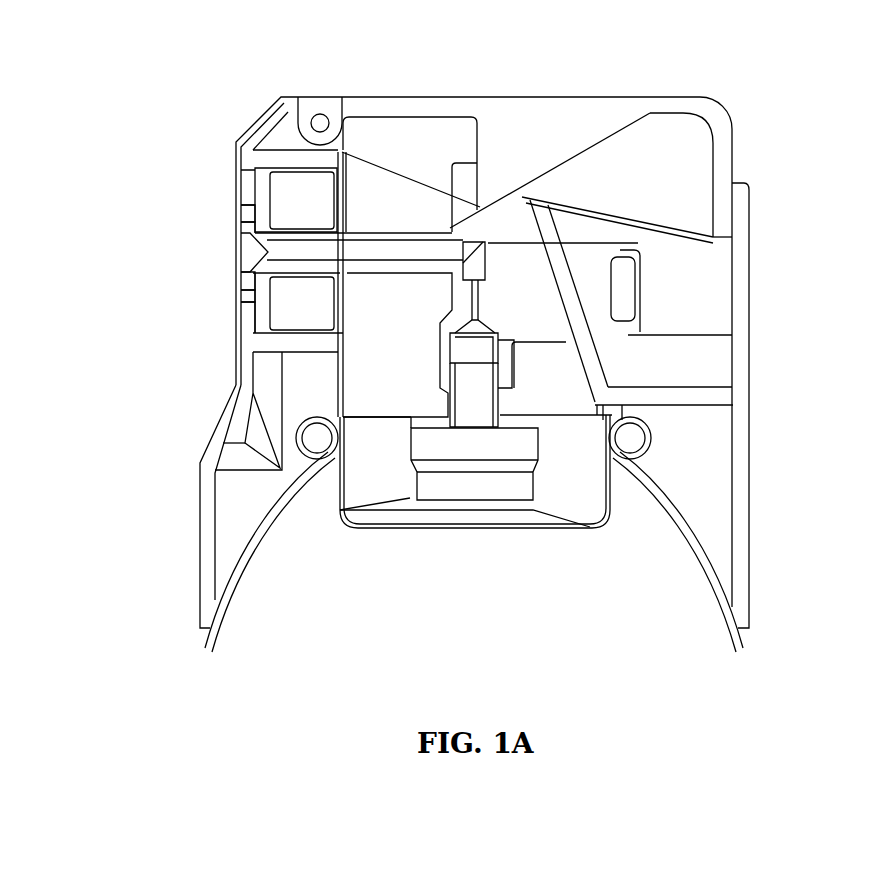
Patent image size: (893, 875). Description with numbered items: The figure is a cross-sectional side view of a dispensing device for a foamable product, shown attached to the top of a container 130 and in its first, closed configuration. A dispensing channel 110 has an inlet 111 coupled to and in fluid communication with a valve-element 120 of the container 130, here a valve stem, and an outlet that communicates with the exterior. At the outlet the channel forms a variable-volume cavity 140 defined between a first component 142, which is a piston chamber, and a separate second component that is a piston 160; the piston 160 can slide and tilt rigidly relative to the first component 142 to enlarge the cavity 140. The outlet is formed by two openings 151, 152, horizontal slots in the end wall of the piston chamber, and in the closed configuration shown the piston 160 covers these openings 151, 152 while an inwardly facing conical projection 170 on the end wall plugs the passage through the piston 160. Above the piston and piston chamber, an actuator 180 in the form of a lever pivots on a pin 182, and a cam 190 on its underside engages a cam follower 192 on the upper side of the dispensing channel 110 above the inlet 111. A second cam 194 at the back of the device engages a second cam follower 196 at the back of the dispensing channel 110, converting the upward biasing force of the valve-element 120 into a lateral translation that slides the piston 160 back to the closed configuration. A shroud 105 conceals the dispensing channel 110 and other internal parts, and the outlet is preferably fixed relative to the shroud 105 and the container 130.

The shroud 105 is at (205, 467).
The dispensing channel 110 is at (353, 248).
The inlet 111 is at (448, 348).
The valve-element 120 is at (463, 405).
The container 130 is at (240, 563).
The variable-volume cavity 140 is at (250, 185).
The first component 142 is at (248, 225).
The opening 151 is at (248, 210).
The opening 152 is at (248, 290).
The piston 160 is at (263, 317).
The conical projection 170 is at (255, 255).
The actuator 180 is at (408, 108).
The pin 182 is at (322, 130).
The cam 190 is at (488, 183).
The cam follower 192 is at (537, 190).
The second cam 194 is at (578, 310).
The second cam follower 196 is at (567, 330).